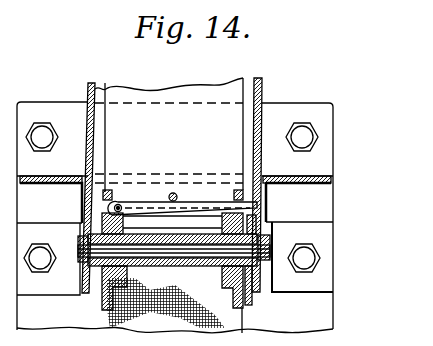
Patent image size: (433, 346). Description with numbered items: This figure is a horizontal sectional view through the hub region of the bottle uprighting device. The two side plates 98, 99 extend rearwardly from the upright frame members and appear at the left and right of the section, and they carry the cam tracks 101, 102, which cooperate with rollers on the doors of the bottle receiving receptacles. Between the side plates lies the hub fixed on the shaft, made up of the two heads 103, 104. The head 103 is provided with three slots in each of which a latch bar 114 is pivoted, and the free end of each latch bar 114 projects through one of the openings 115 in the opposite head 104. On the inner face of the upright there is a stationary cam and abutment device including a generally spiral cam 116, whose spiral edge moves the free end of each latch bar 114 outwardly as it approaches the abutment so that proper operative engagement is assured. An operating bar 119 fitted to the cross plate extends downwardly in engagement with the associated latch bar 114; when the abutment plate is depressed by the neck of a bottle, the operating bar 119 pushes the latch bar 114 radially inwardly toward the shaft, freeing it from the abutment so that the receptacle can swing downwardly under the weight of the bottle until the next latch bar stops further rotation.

The side plate 98 is at (88, 93).
The side plate 99 is at (262, 95).
The cam track 101 is at (250, 79).
The cam track 102 is at (107, 90).
The head 103 is at (103, 202).
The head 104 is at (247, 293).
The latch bar 114 is at (193, 202).
The opening 115 is at (263, 212).
The spiral cam 116 is at (262, 230).
The operating bar 119 is at (174, 193).